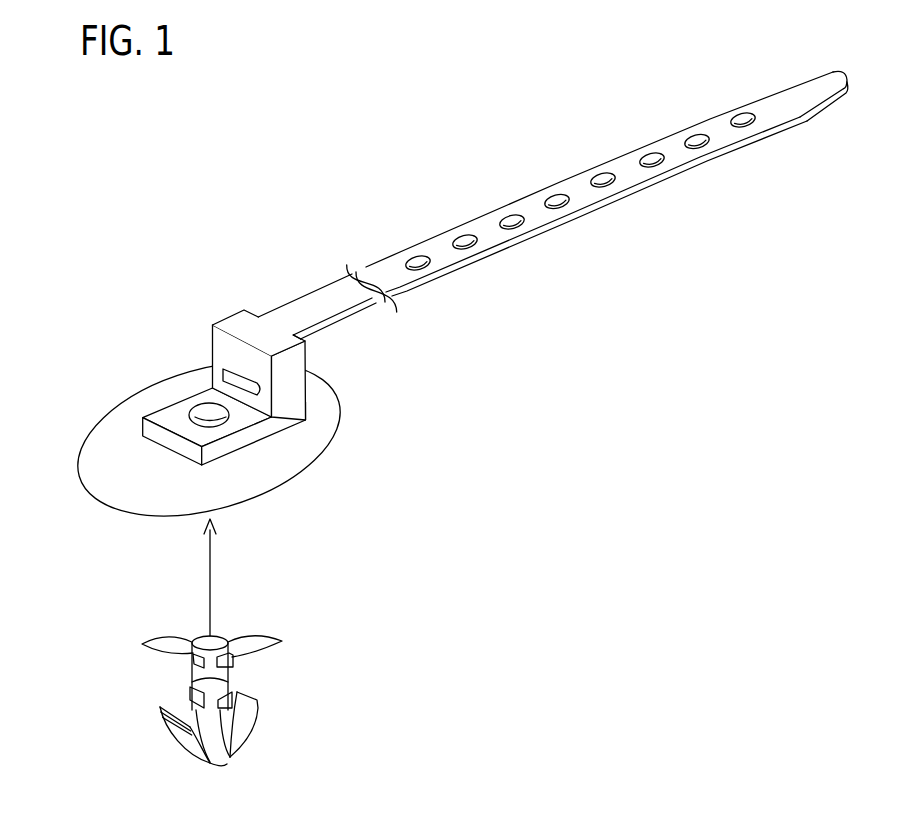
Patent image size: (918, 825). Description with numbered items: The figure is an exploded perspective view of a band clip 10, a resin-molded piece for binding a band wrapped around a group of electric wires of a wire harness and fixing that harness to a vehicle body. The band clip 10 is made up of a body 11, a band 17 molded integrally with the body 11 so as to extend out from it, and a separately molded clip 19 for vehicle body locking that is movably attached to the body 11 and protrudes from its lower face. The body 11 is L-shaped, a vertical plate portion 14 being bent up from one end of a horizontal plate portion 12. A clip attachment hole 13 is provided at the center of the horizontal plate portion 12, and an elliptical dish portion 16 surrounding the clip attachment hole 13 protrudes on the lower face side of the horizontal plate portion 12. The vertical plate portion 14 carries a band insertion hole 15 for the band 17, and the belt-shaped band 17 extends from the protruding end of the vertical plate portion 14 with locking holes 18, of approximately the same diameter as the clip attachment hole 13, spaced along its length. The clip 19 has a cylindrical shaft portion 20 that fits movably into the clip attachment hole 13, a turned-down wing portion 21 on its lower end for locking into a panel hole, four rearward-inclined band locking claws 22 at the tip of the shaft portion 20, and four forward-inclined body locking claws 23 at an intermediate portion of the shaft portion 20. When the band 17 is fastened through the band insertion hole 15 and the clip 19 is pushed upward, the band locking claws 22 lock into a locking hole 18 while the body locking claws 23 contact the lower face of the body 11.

The band clip 10 is at (259, 148).
The body 11 is at (245, 445).
The horizontal plate portion 12 is at (257, 434).
The clip attachment hole 13 is at (203, 407).
The vertical plate portion 14 is at (287, 401).
The band insertion hole 15 is at (227, 371).
The elliptical dish portion 16 is at (120, 489).
The band 17 is at (553, 205).
The locking hole 18 is at (611, 186).
The clip 19 is at (253, 711).
The shaft portion 20 is at (223, 672).
The turned-down wing portion 21 is at (255, 726).
The band locking claw 22 is at (150, 641).
The body locking claw 23 is at (192, 689).